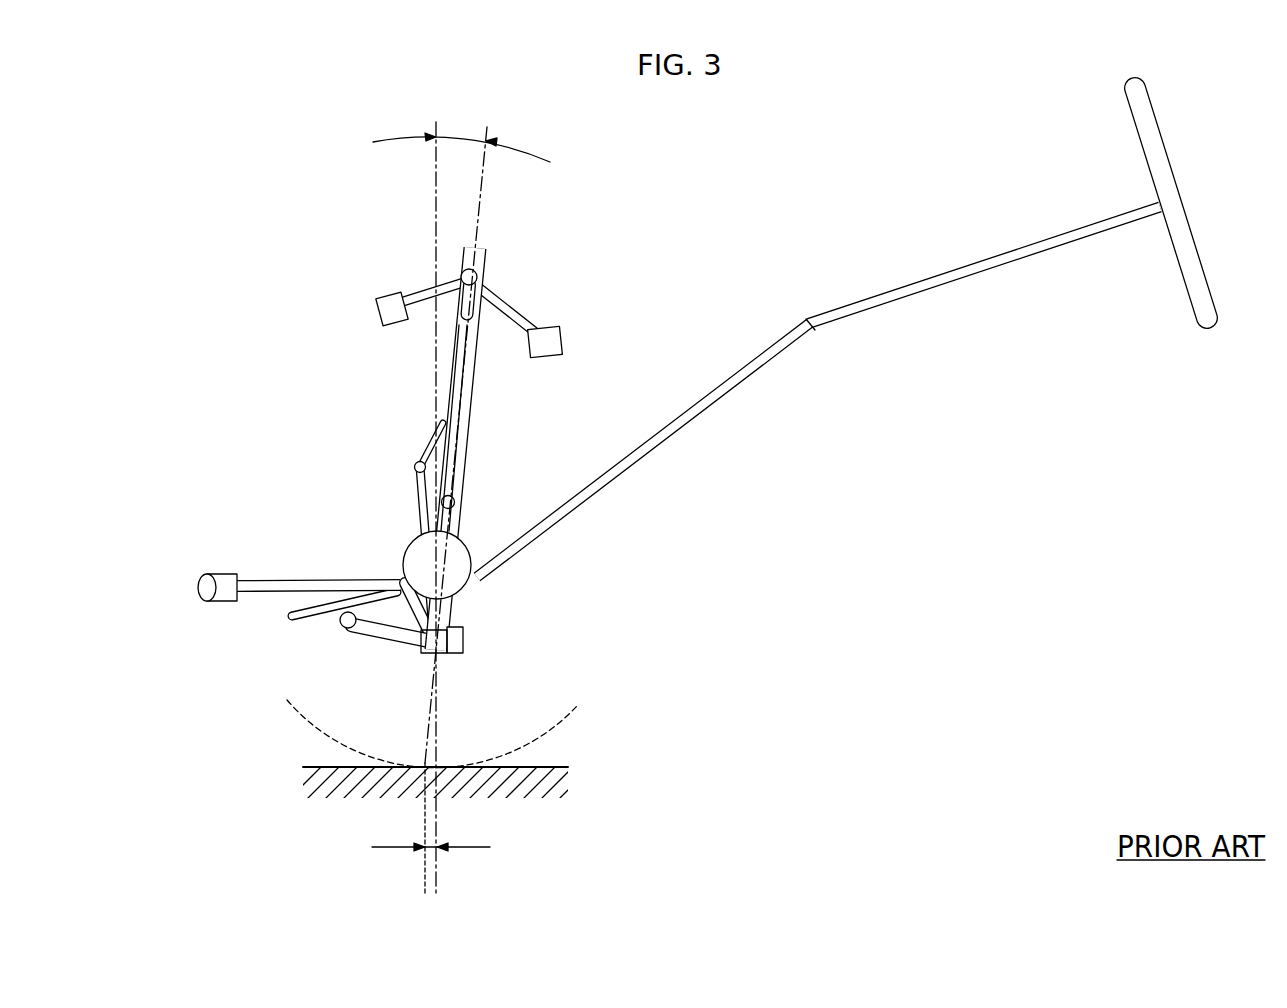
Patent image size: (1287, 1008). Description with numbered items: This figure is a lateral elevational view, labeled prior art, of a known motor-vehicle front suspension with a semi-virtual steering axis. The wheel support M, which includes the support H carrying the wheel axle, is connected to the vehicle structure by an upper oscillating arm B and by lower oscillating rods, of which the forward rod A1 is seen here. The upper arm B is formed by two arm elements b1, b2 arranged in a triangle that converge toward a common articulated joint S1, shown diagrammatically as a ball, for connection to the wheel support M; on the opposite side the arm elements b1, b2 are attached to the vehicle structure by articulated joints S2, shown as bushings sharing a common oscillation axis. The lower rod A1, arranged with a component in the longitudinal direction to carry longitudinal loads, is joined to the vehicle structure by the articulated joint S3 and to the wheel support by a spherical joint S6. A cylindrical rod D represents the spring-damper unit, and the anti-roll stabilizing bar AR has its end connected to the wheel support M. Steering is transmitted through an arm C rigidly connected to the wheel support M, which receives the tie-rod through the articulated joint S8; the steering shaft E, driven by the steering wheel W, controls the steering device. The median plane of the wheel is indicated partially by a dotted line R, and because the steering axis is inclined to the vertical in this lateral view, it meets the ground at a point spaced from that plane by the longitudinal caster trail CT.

The cylindrical rod D is at (466, 243).
The articulated joint S1 is at (470, 275).
The upper oscillating arm B is at (545, 238).
The arm element b2 is at (425, 292).
The arm element b1 is at (510, 314).
The articulated joint S2 is at (385, 298).
The wheel support M is at (472, 392).
The support H is at (408, 548).
The lower oscillating rod A1 is at (262, 580).
The articulated joint S3 is at (205, 590).
The anti-roll stabilizing bar AR is at (290, 617).
The articulated joint S8 is at (345, 624).
The arm C is at (390, 636).
The spherical joint S6 is at (447, 648).
The steering shaft E is at (888, 300).
The steering wheel W is at (1143, 128).
The median plane of the wheel R is at (555, 735).
The caster trail CT is at (437, 847).